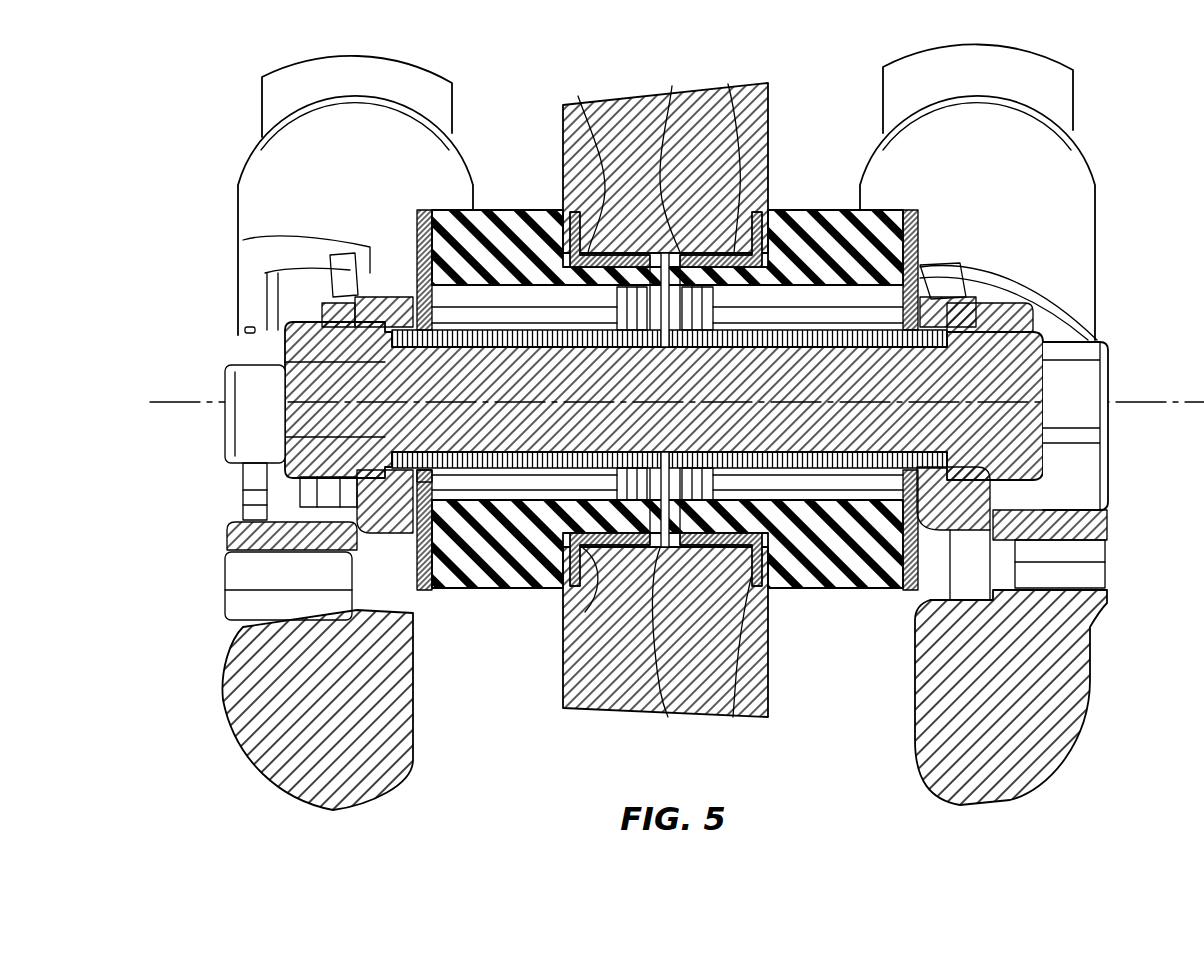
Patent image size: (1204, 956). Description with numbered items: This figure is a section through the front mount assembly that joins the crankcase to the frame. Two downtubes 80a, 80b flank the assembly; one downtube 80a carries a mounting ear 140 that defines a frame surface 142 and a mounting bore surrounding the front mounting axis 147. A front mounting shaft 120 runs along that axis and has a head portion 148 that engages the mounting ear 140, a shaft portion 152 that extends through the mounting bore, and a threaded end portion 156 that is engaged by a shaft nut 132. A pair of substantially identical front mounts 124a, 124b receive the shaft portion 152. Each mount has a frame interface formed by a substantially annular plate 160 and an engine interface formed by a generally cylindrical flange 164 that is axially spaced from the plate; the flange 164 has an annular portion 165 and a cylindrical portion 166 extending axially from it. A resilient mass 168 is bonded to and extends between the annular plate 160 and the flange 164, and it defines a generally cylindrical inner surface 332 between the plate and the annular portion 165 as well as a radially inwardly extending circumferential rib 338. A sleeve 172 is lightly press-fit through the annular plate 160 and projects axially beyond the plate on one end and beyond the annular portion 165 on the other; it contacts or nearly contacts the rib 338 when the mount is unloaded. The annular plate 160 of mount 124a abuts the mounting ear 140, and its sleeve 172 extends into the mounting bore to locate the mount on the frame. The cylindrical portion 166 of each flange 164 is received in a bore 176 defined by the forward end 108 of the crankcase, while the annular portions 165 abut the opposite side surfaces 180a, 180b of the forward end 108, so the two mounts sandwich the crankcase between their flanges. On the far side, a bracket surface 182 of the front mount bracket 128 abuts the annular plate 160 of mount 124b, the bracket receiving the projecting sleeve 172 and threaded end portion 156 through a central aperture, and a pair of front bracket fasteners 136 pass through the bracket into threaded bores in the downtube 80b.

The downtube 80a is at (1040, 84).
The downtube 80b is at (268, 100).
The forward end 108 is at (646, 108).
The front mounting shaft 120 is at (397, 272).
The front mount 124a is at (788, 608).
The front mount 124b is at (463, 608).
The front mount bracket 128 is at (355, 568).
The shaft nut 132 is at (262, 465).
The front bracket fasteners 136 is at (245, 342).
The mounting ear 140 is at (962, 530).
The frame surface 142 is at (898, 477).
The front mounting axis 147 is at (1145, 400).
The head portion 148 is at (1038, 456).
The shaft portion 152 is at (895, 343).
The threaded end portion 156 is at (282, 432).
The annular plate 160 is at (417, 228).
The cylindrical flange 164 is at (657, 160).
The annular portion 165 is at (580, 606).
The cylindrical portion 166 is at (669, 717).
The resilient mass 168 is at (525, 225).
The sleeve 172 is at (403, 282).
The bore 176 is at (677, 302).
The side surface 180a is at (782, 131).
The side surface 180b is at (550, 662).
The bracket surface 182 is at (425, 482).
The inner surface 332 is at (566, 498).
The circumferential rib 338 is at (632, 306).